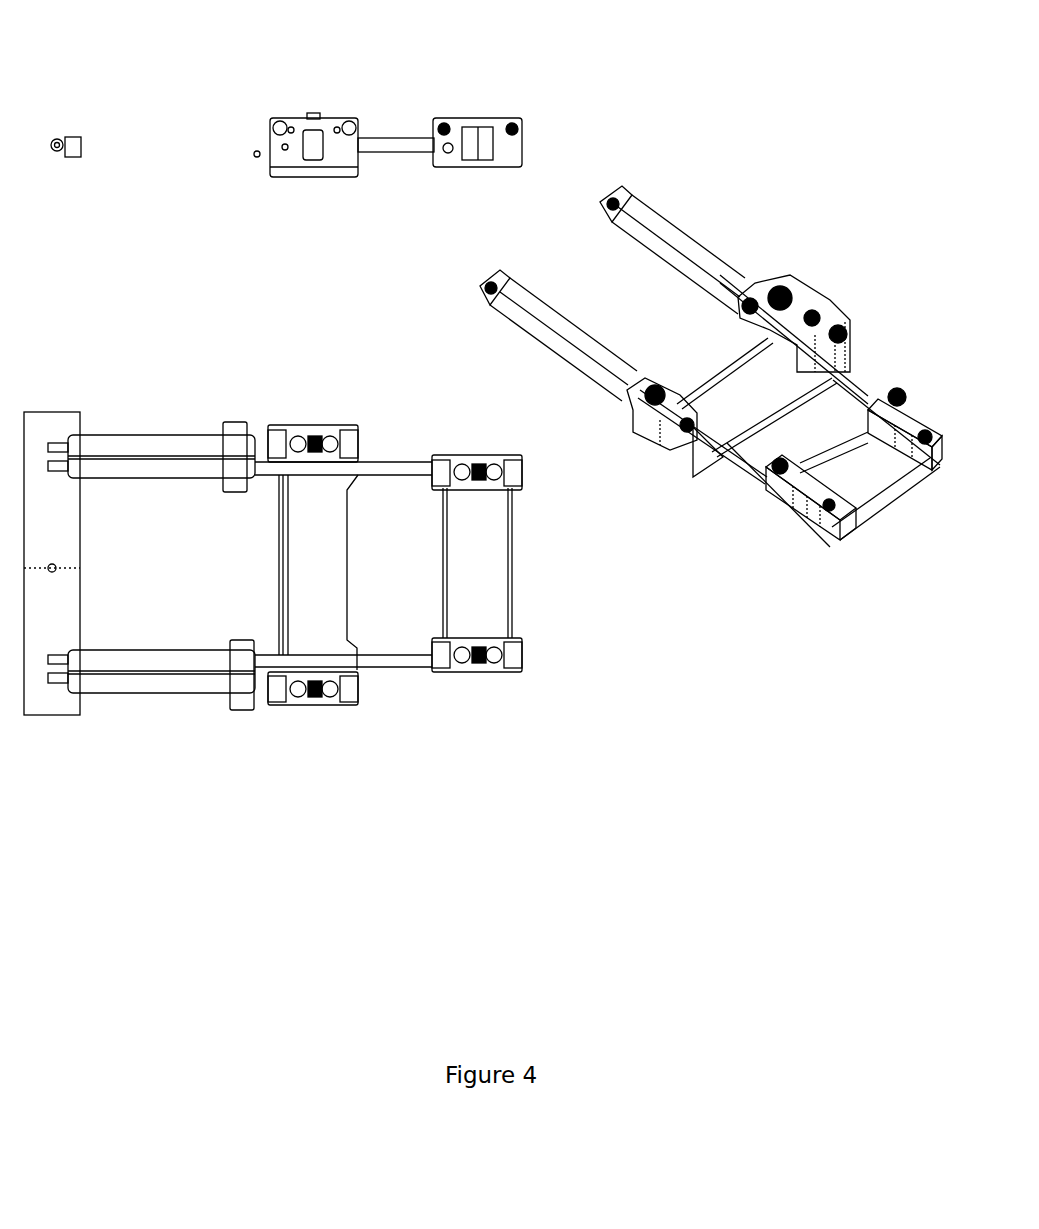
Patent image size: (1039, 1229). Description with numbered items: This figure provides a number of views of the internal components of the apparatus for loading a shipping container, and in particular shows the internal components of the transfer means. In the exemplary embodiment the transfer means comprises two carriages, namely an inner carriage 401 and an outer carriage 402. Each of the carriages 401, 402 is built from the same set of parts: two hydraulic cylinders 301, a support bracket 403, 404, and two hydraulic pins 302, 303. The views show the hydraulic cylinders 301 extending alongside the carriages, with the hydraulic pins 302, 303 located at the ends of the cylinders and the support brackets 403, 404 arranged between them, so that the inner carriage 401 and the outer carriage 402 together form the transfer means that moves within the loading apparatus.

The hydraulic cylinder 301 is at (192, 458).
The hydraulic pin 302 is at (473, 117).
The hydraulic pin 303 is at (312, 97).
The inner carriage 401 is at (522, 578).
The outer carriage 402 is at (357, 620).
The support bracket 403 is at (485, 545).
The support bracket 404 is at (297, 560).